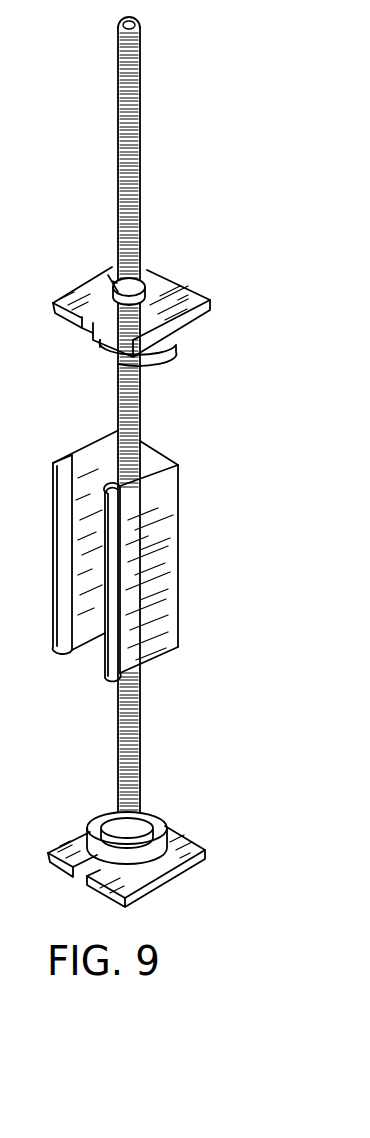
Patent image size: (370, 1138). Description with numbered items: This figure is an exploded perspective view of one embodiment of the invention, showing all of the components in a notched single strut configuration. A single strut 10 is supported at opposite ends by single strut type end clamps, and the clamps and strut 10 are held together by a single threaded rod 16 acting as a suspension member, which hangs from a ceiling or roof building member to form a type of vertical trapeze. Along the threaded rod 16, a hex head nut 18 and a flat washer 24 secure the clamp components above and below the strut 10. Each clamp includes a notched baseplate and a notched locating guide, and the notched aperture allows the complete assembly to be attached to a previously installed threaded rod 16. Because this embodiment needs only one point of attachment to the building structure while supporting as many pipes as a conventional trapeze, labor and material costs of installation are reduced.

The channel member 10 is at (165, 593).
The threaded rod 16 is at (140, 194).
The hex head nut 18 is at (146, 270).
The flat washer 24 is at (113, 291).